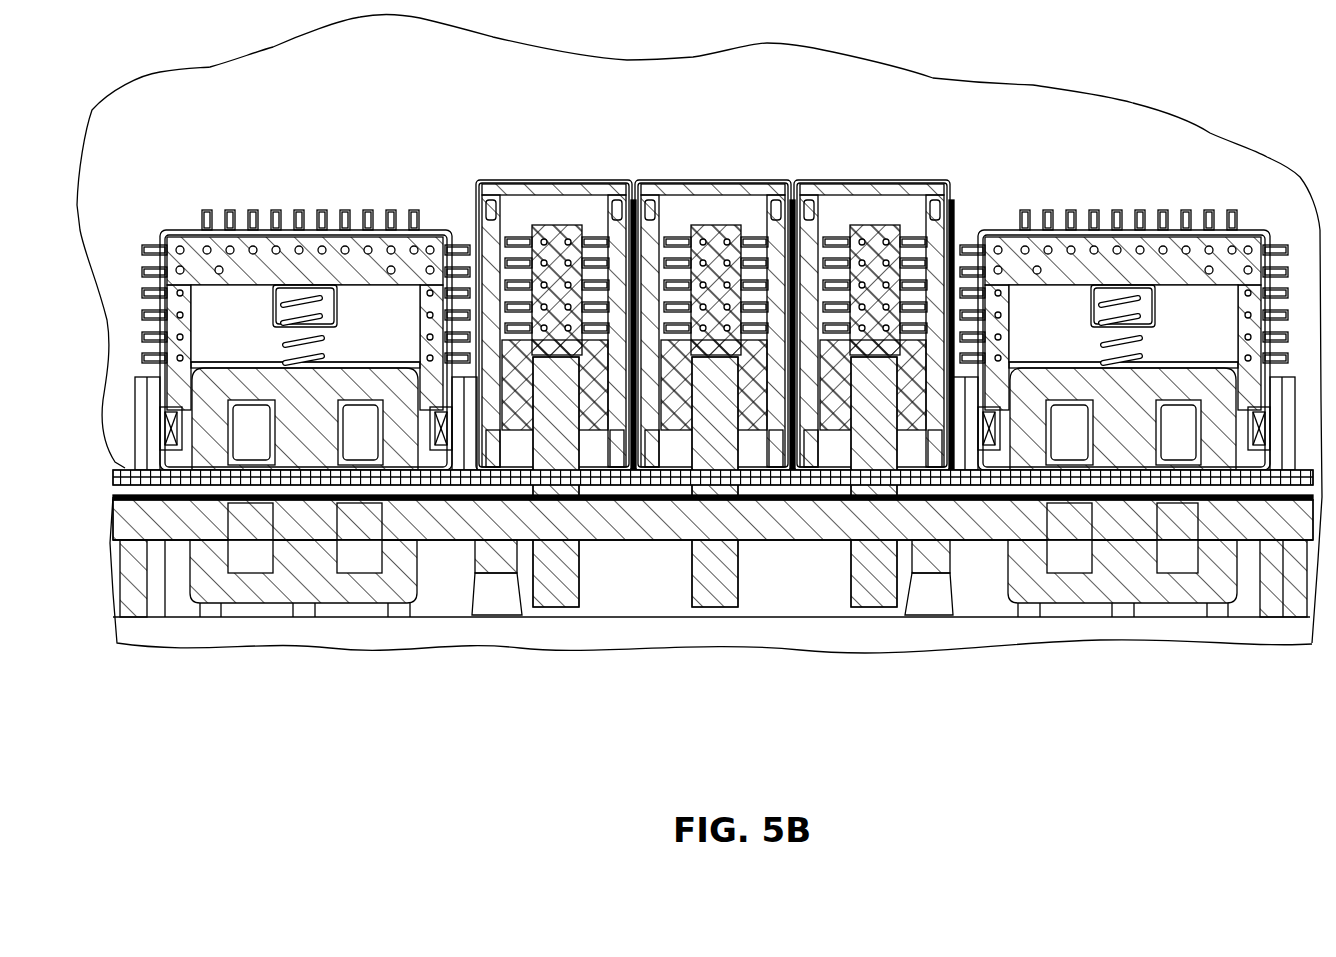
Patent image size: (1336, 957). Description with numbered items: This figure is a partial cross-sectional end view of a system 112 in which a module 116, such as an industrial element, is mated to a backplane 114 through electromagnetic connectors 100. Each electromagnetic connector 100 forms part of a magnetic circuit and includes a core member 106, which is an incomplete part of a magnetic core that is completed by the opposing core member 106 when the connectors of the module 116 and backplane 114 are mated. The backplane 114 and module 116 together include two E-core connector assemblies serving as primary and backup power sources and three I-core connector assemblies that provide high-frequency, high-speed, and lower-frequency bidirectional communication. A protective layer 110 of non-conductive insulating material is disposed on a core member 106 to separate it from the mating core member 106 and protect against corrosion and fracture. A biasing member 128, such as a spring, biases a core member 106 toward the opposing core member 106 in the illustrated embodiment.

The electromagnetic connector 100 is at (560, 172).
The core member 106 is at (505, 345).
The protective layer 110 is at (155, 468).
The system 112 is at (1109, 65).
The backplane 114 is at (800, 660).
The module 116 is at (1216, 128).
The biasing member 128 is at (308, 303).